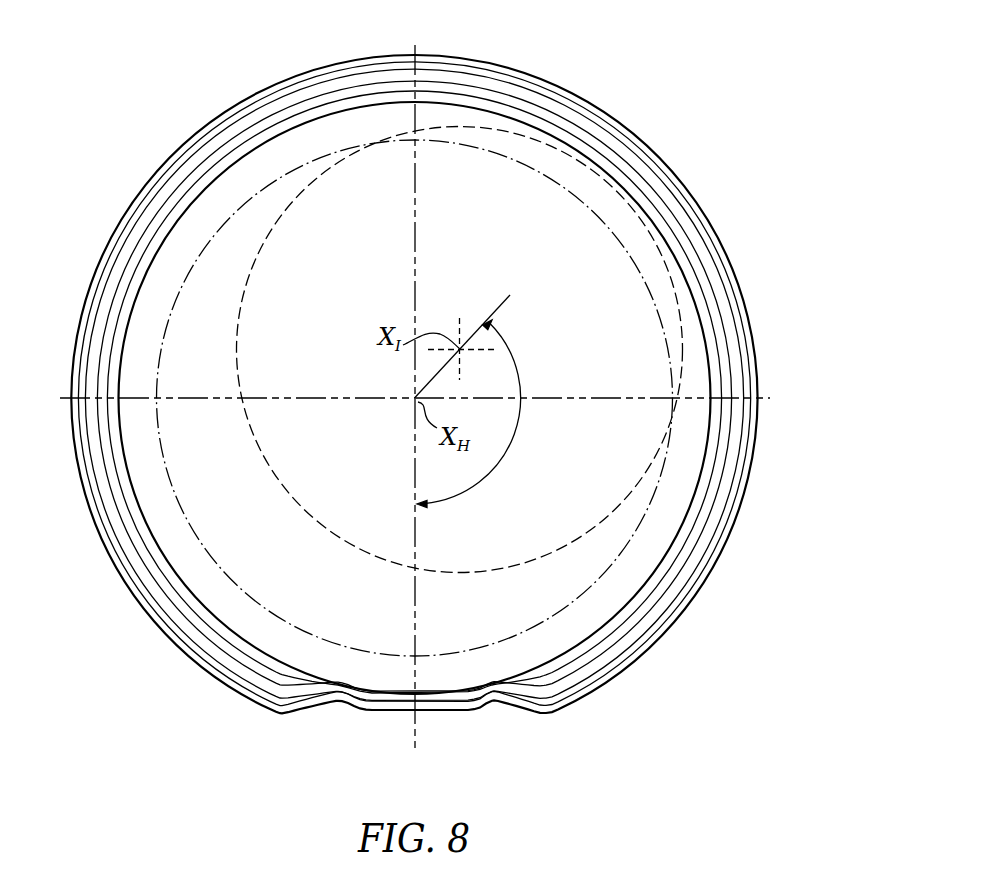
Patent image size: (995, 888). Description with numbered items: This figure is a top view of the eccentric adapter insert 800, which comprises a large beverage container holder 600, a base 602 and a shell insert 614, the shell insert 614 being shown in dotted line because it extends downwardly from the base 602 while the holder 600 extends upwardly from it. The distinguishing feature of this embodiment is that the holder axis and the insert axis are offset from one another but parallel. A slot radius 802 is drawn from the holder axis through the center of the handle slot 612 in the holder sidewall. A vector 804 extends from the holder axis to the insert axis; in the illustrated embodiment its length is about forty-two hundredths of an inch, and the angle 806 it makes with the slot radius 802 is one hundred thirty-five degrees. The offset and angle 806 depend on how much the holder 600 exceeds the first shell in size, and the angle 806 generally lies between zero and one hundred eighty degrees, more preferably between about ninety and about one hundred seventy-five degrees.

The holder 600 is at (118, 570).
The base 602 is at (243, 494).
The handle slot 612 is at (385, 725).
The shell insert 614 is at (452, 122).
The eccentric adapter insert 800 is at (615, 64).
The slot radius 802 is at (413, 609).
The vector 804 is at (436, 376).
The angle 806 is at (512, 443).